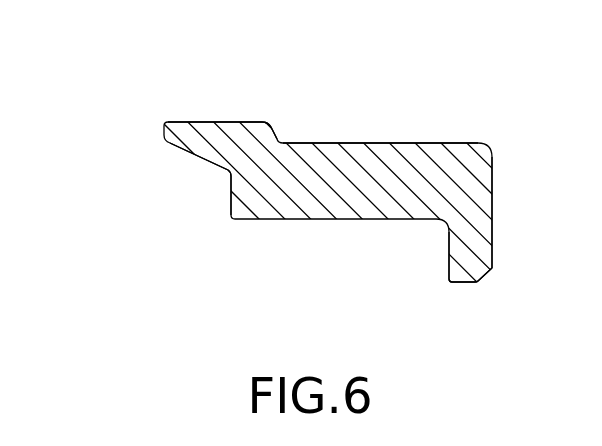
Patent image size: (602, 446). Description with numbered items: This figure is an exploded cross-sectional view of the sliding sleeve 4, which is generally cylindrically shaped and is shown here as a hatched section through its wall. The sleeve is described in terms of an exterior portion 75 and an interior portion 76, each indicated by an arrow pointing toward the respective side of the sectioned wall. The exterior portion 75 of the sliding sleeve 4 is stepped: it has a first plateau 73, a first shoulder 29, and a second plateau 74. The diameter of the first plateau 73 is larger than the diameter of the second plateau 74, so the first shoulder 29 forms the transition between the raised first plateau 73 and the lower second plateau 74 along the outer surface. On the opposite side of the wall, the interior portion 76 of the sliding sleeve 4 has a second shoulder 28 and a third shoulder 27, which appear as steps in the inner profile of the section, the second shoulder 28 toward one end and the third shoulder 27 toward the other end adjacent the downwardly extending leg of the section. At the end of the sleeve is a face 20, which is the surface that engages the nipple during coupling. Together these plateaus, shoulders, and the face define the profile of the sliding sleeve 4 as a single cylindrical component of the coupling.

The sliding sleeve 4 is at (307, 195).
The face 20 is at (492, 215).
The third shoulder 27 is at (449, 247).
The second shoulder 28 is at (227, 196).
The first shoulder 29 is at (274, 127).
The first plateau 73 is at (215, 123).
The second plateau 74 is at (403, 140).
The exterior portion 75 is at (341, 90).
The interior portion 76 is at (355, 262).